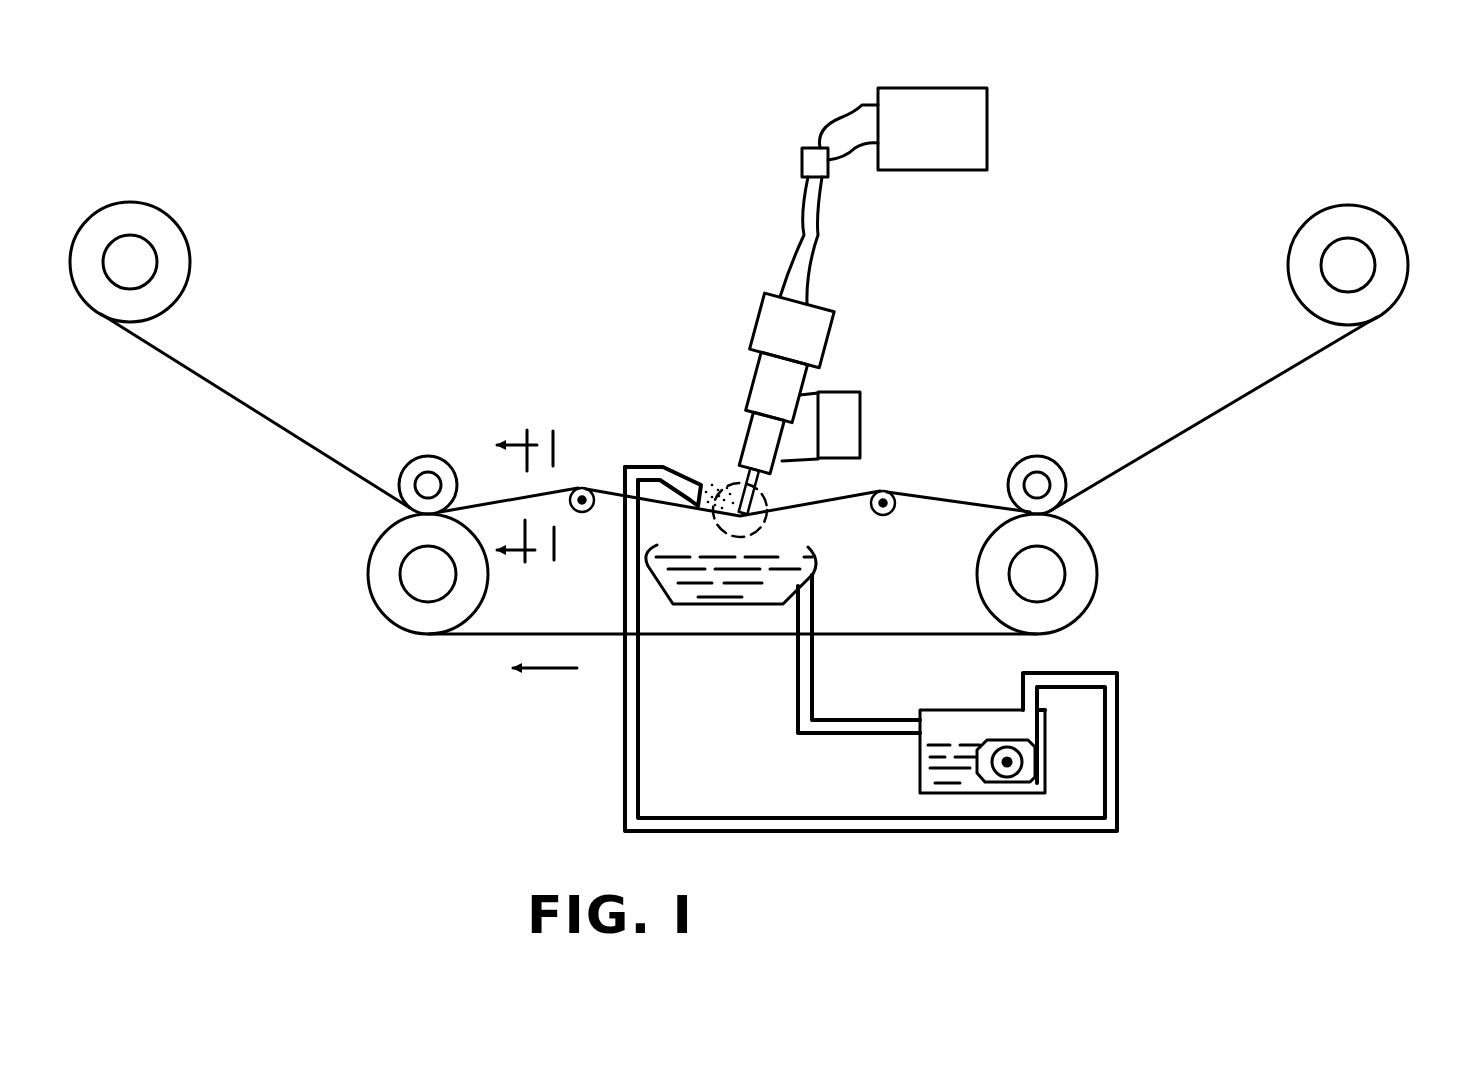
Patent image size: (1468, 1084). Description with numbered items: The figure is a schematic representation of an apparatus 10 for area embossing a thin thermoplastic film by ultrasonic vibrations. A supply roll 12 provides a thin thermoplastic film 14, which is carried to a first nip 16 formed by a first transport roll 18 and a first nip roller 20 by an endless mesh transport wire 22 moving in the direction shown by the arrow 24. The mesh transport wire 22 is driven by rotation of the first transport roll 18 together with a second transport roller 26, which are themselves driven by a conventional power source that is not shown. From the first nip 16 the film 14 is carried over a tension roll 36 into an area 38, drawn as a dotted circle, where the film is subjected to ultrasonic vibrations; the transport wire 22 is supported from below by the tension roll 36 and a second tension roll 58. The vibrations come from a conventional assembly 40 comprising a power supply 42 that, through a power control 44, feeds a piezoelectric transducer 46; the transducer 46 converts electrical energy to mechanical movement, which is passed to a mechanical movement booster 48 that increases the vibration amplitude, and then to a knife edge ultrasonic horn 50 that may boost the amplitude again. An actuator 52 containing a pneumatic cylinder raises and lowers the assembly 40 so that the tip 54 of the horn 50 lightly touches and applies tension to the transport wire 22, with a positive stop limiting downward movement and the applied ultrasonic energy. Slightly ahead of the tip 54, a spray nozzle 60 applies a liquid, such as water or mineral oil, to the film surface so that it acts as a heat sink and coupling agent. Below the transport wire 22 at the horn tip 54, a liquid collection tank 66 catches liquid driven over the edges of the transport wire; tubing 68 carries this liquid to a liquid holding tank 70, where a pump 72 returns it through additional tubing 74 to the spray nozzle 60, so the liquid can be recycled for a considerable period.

The apparatus 10 is at (480, 228).
The supply roll 12 is at (184, 223).
The thin thermoplastic film 14 is at (210, 375).
The first nip 16 is at (384, 462).
The first transport roll 18 is at (372, 577).
The first nip roller 20 is at (440, 449).
The endless mesh transport wire 22 is at (490, 636).
The arrow 24 is at (562, 673).
The second transport roller 26 is at (1090, 555).
The tension roll 36 is at (588, 487).
The area 38 is at (775, 524).
The assembly 40 is at (868, 323).
The power supply 42 is at (988, 120).
The power control 44 is at (802, 162).
The piezoelectric transducer 46 is at (823, 302).
The mechanical movement booster 48 is at (748, 378).
The knife edge ultrasonic horn 50 is at (731, 418).
The actuator 52 is at (857, 382).
The tip 54 is at (723, 490).
The second tension roll 58 is at (884, 490).
The spray nozzle 60 is at (698, 483).
The liquid collection tank 66 is at (727, 607).
The tubing 68 is at (815, 672).
The liquid holding tank 70 is at (920, 762).
The pump 72 is at (1036, 755).
The additional tubing 74 is at (798, 832).